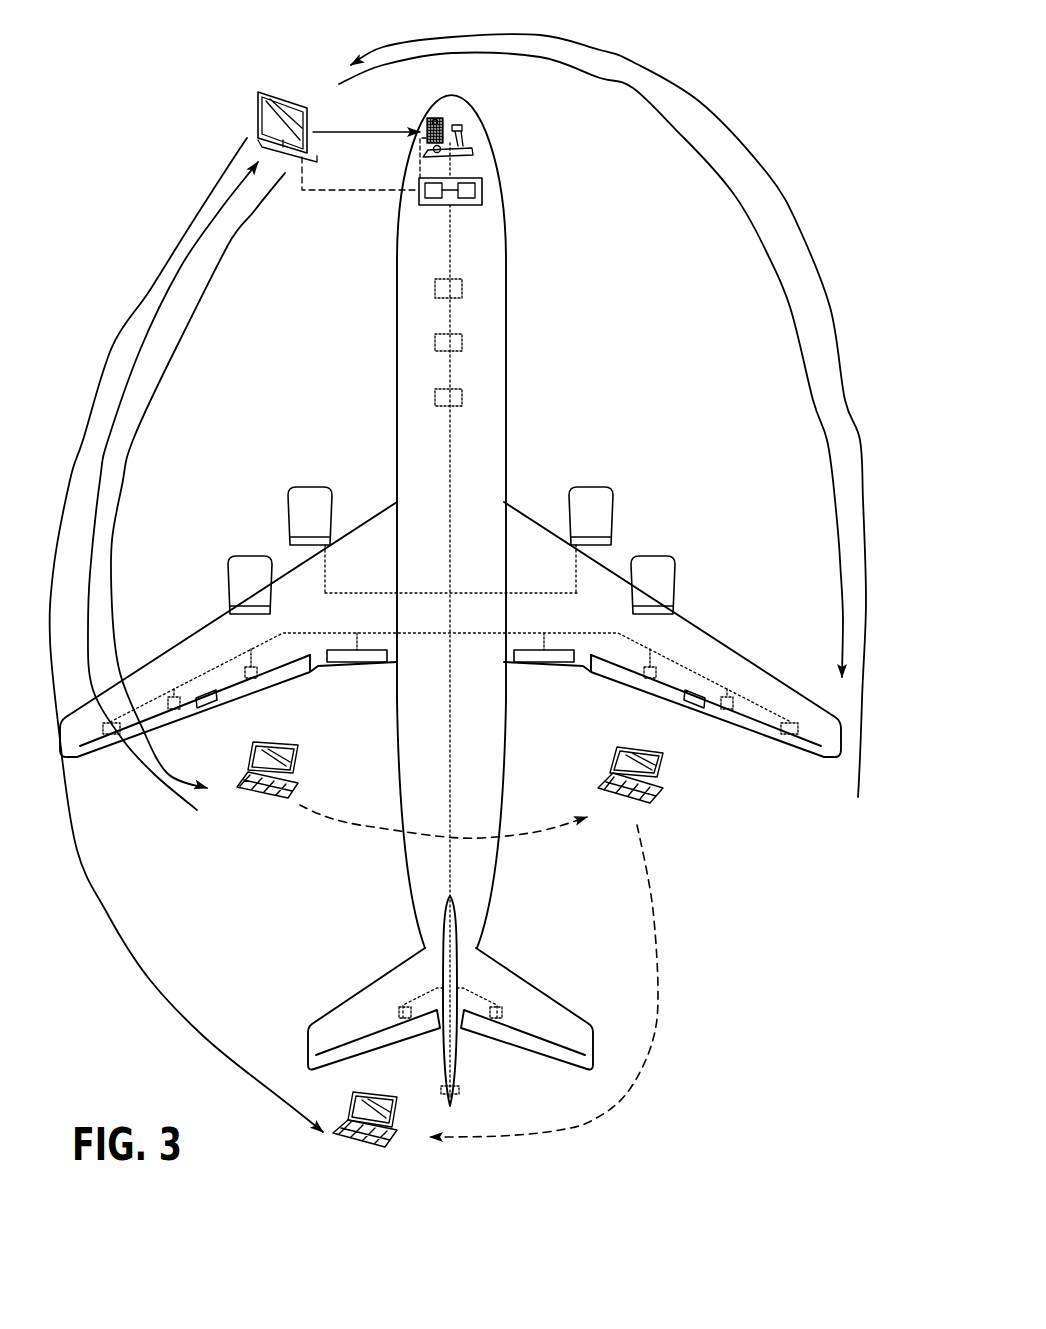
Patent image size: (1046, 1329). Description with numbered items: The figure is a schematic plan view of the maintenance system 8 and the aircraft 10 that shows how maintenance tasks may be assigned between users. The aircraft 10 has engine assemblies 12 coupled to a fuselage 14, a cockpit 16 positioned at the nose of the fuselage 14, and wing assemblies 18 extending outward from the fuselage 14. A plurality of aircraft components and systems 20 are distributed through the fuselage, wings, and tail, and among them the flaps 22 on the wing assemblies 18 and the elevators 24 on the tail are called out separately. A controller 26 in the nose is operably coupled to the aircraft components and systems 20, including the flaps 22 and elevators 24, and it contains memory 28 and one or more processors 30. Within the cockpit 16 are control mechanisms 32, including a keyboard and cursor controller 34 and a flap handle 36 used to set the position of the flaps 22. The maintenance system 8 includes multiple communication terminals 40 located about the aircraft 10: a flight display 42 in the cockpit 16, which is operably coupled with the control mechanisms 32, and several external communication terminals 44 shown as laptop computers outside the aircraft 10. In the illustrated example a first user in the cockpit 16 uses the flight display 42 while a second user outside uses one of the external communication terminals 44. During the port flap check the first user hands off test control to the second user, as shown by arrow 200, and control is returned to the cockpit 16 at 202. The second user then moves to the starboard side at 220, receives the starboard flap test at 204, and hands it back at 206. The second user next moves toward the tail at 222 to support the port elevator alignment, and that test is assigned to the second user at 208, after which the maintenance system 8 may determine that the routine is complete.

The maintenance system 8 is at (248, 92).
The aircraft 10 is at (410, 122).
The engine assemblies 12 is at (312, 492).
The fuselage 14 is at (397, 357).
The cockpit 16 is at (437, 173).
The wing assemblies 18 is at (230, 633).
The aircraft components and systems 20 is at (462, 289).
The flaps 22 is at (216, 702).
The elevators 24 is at (330, 1055).
The controller 26 is at (487, 183).
The memory 28 is at (470, 203).
The processors 30 is at (433, 203).
The control mechanisms 32 is at (452, 115).
The keyboard and cursor controller 34 is at (435, 113).
The flap handle 36 is at (463, 133).
The communication terminals 40 is at (247, 122).
The flight display 42 is at (283, 155).
The external communication terminals 44 is at (303, 782).
The arrow 200 is at (228, 245).
The hand back of routine 202 is at (180, 268).
The assignment of starboard flap test 204 is at (684, 135).
The hand back of starboard flap task 206 is at (764, 170).
The assignment of elevator test 208 is at (112, 347).
The movement to starboard flap location 220 is at (327, 817).
The movement to elevator location 222 is at (648, 1043).